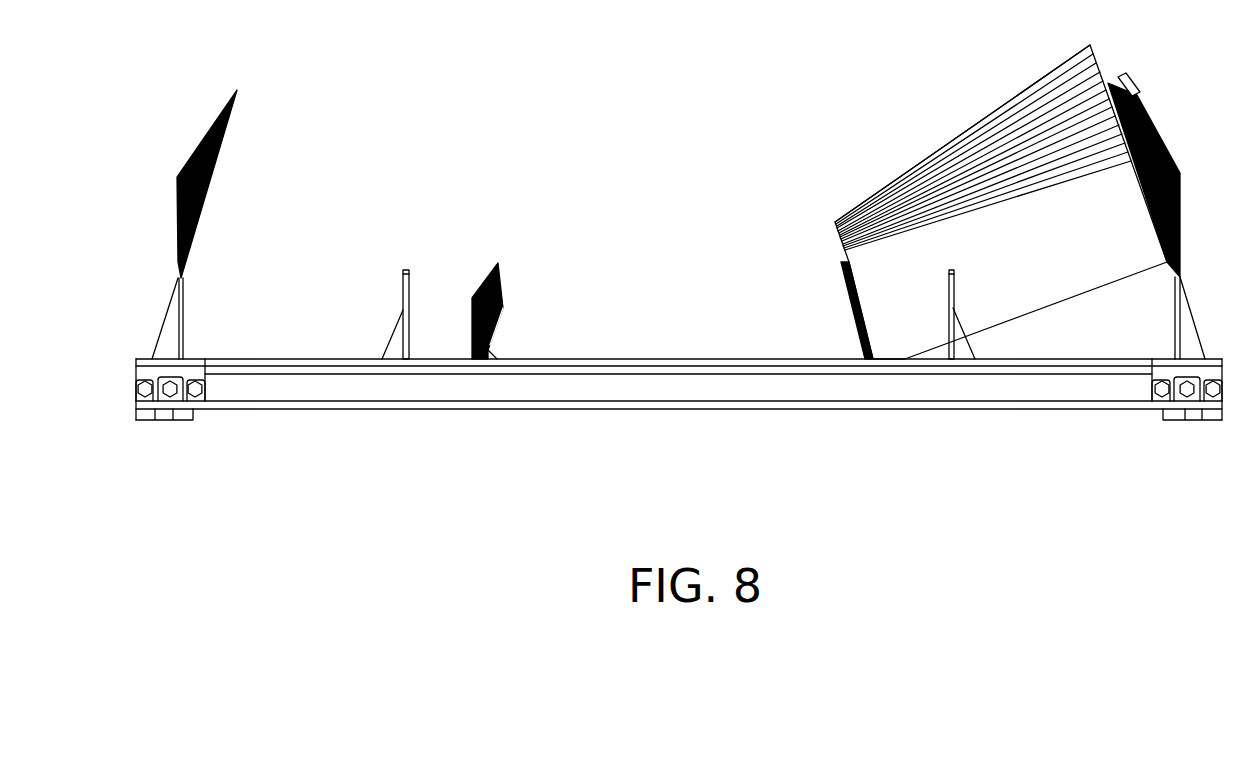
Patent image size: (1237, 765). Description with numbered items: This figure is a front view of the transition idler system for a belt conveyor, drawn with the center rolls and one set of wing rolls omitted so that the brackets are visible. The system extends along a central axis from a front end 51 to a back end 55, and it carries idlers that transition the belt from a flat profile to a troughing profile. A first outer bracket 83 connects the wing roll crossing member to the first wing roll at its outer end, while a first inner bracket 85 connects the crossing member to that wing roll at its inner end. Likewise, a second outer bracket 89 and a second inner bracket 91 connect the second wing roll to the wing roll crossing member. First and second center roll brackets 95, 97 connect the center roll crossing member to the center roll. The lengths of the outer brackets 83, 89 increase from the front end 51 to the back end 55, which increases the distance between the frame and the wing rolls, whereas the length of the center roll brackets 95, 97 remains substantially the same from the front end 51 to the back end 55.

The front end 51 is at (652, 390).
The back end 55 is at (1025, 88).
The first outer bracket 83 is at (212, 191).
The first inner bracket 85 is at (486, 278).
The second outer bracket 89 is at (1165, 148).
The second inner bracket 91 is at (848, 318).
The first center roll bracket 95 is at (405, 347).
The second center roll bracket 97 is at (972, 350).